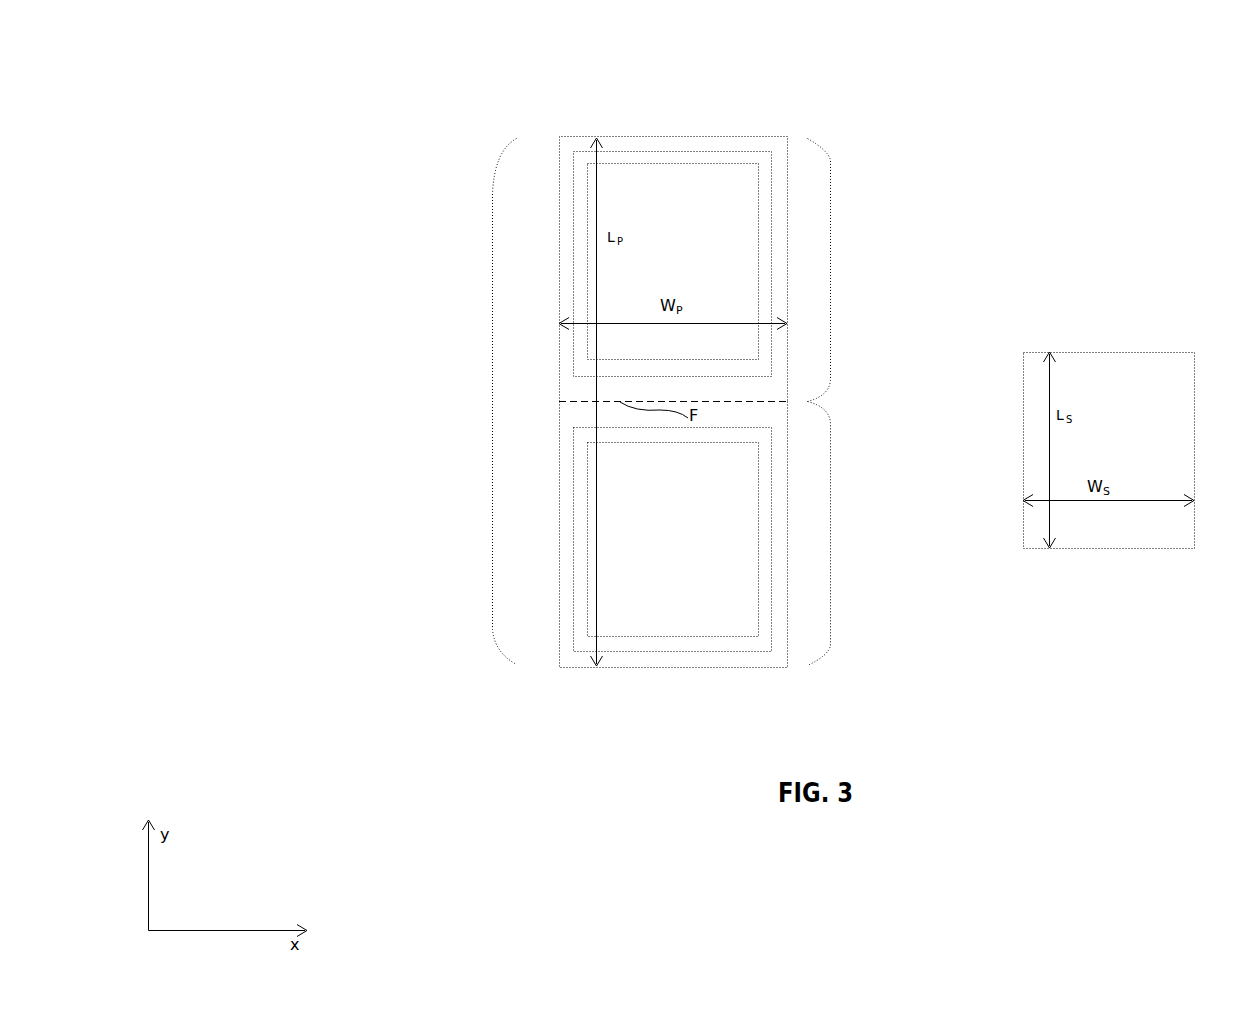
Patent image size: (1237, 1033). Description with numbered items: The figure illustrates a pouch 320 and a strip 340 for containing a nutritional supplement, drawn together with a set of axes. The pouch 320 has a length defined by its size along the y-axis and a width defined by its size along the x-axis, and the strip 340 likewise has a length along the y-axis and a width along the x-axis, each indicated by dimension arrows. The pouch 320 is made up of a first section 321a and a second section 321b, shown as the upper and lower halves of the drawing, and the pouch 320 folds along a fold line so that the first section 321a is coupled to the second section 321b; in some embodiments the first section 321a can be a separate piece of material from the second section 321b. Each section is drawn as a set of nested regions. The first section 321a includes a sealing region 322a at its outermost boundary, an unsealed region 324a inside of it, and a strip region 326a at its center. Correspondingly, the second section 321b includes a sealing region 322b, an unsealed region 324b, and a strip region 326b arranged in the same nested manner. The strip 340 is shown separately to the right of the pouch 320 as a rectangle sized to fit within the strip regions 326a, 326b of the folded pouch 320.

The pouch 320 is at (492, 406).
The first section 321a is at (832, 268).
The second section 321b is at (832, 530).
The sealing region 322a is at (622, 142).
The sealing region 322b is at (732, 658).
The unsealed region 324a is at (682, 152).
The unsealed region 324b is at (705, 645).
The strip region 326a is at (727, 173).
The strip region 326b is at (665, 622).
The strip 340 is at (1097, 372).